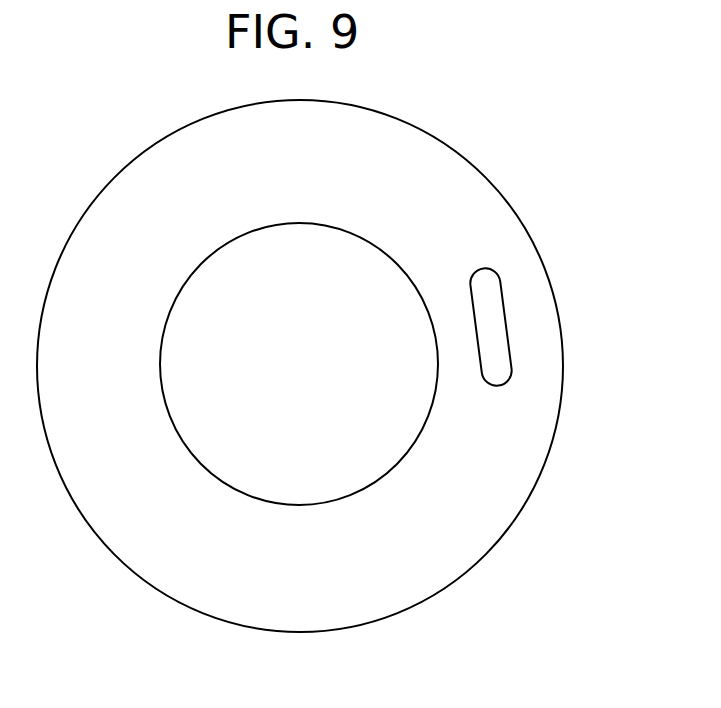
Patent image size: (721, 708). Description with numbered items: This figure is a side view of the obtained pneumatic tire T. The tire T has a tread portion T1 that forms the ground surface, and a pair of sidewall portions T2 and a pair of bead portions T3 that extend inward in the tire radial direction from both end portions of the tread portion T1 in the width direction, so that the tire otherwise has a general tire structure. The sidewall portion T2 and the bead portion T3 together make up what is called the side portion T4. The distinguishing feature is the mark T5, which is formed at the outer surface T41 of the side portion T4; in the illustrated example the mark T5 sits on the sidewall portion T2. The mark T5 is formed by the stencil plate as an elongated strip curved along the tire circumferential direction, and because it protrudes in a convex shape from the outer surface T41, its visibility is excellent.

The pneumatic tire T is at (467, 141).
The tread portion T1 is at (537, 250).
The sidewall portion T2 is at (475, 460).
The bead portion T3 is at (395, 478).
The side portion T4 is at (633, 450).
The outer surface T41 is at (470, 232).
The mark T5 is at (510, 347).